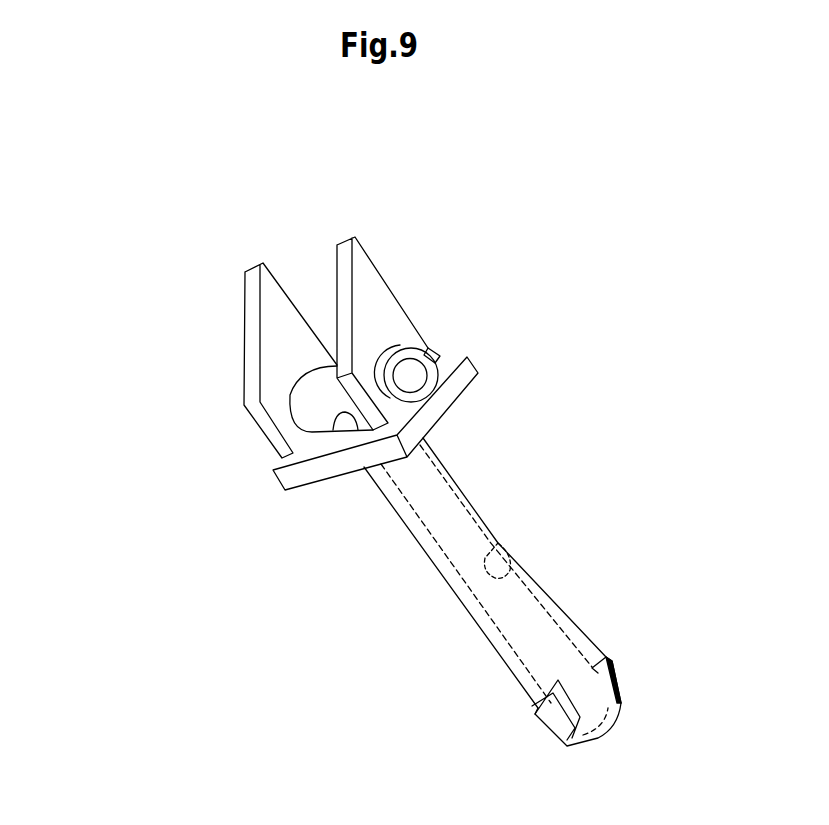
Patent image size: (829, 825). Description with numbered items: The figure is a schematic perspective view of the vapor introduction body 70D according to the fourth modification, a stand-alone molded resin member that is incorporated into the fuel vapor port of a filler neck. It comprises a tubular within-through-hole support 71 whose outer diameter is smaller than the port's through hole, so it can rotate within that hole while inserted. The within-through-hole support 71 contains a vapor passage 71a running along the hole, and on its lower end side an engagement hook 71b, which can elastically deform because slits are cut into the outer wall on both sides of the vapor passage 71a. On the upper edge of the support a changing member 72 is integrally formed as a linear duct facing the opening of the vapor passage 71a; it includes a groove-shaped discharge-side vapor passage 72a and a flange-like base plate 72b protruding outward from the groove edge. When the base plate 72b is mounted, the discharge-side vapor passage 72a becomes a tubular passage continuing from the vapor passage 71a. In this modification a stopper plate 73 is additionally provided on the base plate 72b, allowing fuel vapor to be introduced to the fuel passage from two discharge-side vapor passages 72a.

The vapor introduction body 70D is at (631, 160).
The within-through-hole support 71 is at (463, 488).
The vapor passage 71a is at (490, 580).
The engagement hook 71b is at (543, 702).
The changing member 72 is at (322, 403).
The discharge-side vapor passage 72a is at (413, 382).
The base plate 72b is at (297, 477).
The stopper plate 73 is at (362, 310).